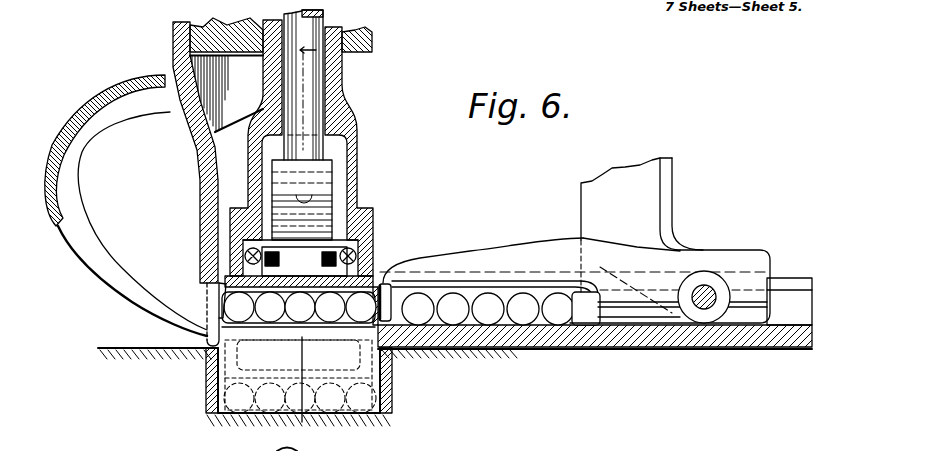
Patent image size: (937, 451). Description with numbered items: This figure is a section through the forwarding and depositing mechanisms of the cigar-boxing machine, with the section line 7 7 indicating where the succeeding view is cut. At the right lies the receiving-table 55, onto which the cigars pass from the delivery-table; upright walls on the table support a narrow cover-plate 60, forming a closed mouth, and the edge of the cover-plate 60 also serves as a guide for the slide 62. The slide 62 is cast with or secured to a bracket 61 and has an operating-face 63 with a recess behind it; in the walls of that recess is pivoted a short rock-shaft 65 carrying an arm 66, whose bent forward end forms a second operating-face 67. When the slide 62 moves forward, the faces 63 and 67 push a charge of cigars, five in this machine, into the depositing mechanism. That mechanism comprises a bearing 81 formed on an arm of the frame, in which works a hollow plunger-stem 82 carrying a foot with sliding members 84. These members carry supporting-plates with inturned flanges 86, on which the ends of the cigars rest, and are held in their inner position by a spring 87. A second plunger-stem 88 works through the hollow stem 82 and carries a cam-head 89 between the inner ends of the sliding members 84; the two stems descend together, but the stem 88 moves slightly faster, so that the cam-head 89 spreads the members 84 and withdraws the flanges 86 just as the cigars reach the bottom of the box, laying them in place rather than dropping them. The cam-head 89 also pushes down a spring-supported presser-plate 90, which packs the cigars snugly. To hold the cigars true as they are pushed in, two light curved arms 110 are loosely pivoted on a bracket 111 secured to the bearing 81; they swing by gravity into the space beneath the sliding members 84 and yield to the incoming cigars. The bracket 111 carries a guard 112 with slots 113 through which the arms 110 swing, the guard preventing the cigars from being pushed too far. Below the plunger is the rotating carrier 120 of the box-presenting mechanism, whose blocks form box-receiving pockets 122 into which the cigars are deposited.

The receiving-table 55 is at (648, 346).
The cover-plate 60 is at (803, 266).
The bracket 61 is at (642, 225).
The slide 62 is at (770, 248).
The operating-face 63 is at (501, 308).
The rock-shaft 65 is at (726, 264).
The arm 66 is at (573, 266).
The operating-face 67 is at (386, 283).
The bearing 81 is at (197, 42).
The hollow plunger-stem 82 is at (357, 138).
The sliding members 84 is at (316, 245).
The inturned flanges 86 is at (343, 323).
The spring 87 is at (232, 254).
The second plunger-stem 88 is at (330, 86).
The cam-head 89 is at (333, 203).
The presser-plate 90 is at (310, 293).
The curved arms 110 is at (126, 205).
The bracket 111 is at (227, 94).
The guard 112 is at (204, 223).
The slots 113 is at (208, 285).
The rotating carrier 120 is at (158, 367).
The box-receiving pockets 122 is at (347, 415).
The section line 7 7 is at (308, 232).